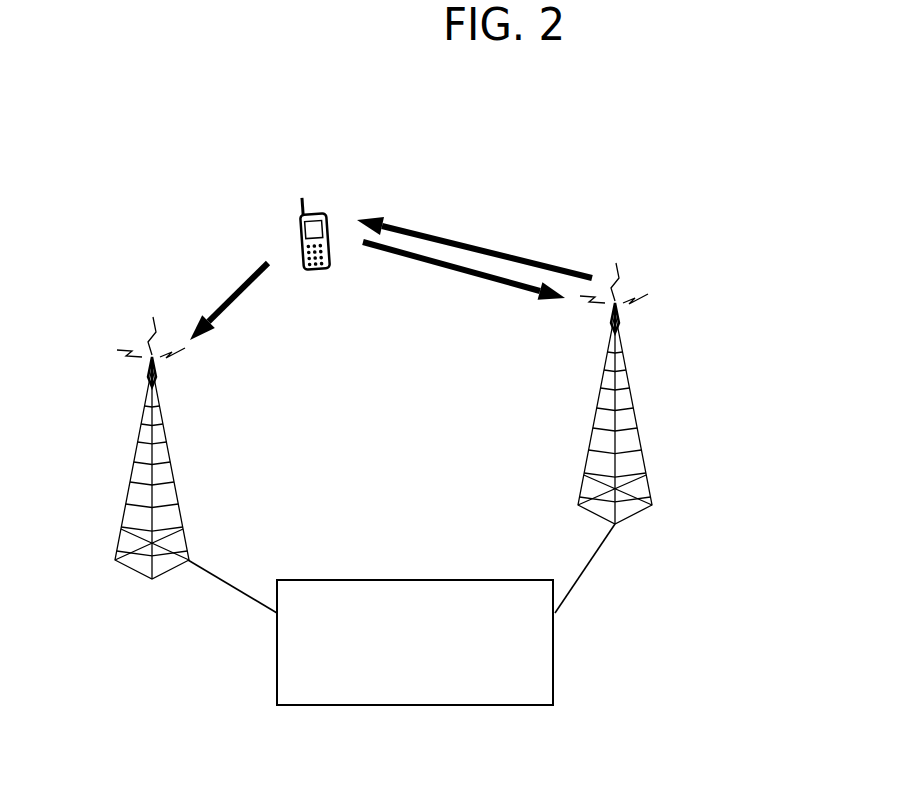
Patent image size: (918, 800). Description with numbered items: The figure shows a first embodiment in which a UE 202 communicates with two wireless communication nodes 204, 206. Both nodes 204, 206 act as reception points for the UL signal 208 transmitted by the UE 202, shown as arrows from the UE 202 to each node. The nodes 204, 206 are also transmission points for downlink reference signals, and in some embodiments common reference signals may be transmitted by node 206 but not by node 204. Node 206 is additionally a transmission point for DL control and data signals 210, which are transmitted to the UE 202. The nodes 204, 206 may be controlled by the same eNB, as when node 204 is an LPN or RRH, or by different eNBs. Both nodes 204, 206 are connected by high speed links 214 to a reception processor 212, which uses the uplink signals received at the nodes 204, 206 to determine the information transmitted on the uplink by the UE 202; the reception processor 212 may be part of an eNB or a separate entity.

The UE 202 is at (320, 252).
The wireless communication node 204 is at (123, 448).
The wireless communication node 206 is at (649, 393).
The UL signal 208 is at (439, 266).
The DL control and data signals 210 is at (464, 244).
The reception processor 212 is at (415, 670).
The high speed links 214 is at (203, 570).